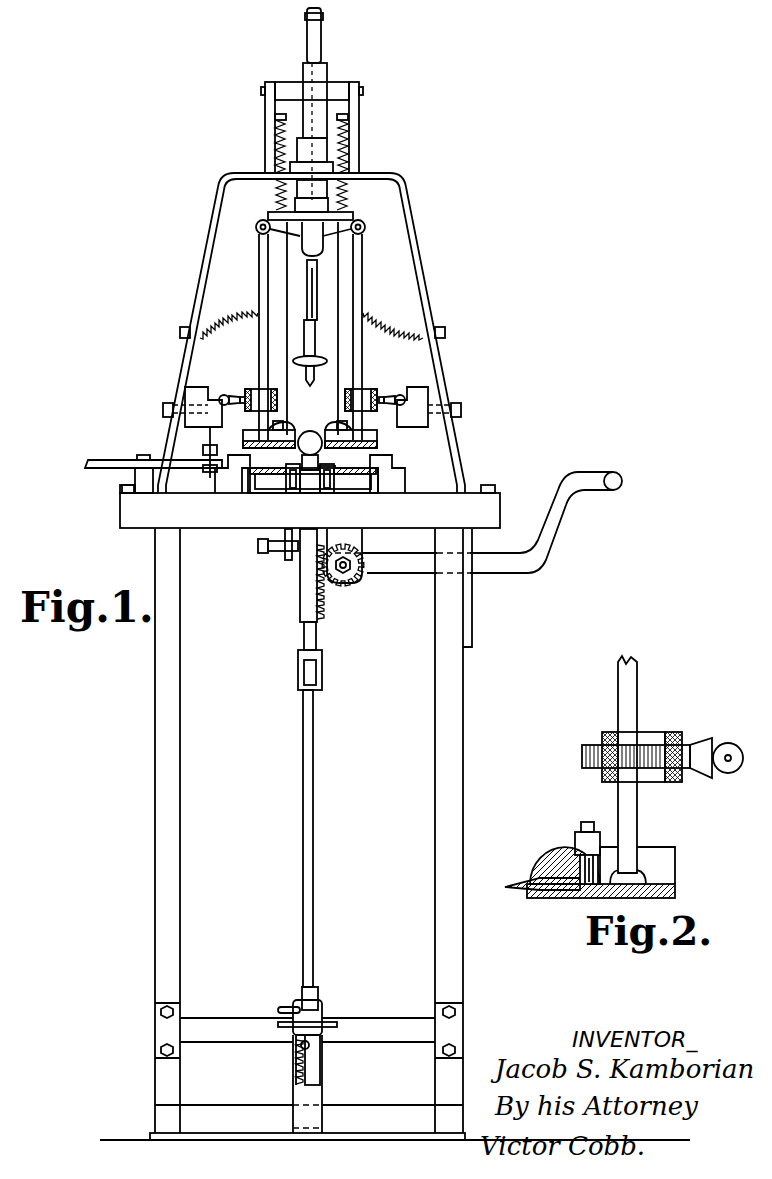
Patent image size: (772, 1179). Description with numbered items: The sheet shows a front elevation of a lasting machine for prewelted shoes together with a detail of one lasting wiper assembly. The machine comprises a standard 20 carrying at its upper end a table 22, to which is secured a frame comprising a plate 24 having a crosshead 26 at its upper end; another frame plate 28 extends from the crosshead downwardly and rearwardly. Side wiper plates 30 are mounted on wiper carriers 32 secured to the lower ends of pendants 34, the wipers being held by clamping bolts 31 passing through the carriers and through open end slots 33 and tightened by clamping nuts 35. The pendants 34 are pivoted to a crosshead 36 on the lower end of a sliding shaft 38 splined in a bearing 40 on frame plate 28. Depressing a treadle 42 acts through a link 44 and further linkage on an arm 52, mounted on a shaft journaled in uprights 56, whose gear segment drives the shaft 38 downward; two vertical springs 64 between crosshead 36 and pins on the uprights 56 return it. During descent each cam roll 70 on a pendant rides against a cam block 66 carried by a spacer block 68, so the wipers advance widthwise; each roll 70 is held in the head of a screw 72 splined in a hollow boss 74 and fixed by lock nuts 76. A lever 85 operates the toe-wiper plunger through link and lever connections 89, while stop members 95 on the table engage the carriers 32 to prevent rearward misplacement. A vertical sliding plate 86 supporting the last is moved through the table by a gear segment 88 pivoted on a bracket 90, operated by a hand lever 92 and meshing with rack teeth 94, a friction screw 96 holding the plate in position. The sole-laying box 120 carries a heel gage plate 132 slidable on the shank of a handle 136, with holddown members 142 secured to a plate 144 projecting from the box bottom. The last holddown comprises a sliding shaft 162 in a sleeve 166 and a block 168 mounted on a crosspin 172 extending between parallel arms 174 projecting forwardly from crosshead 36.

In FIG. 1, the standard 20 is at (464, 810).
In FIG. 1, the table 22 is at (310, 506).
In FIG. 1, the frame plate 24 is at (421, 277).
In FIG. 1, the crosshead 26 is at (378, 173).
In FIG. 1, the frame plate 28 is at (340, 262).
In FIG. 1, the side wiper plates 30 is at (306, 431).
In FIG. 2, the side wiper plates 30 is at (523, 885).
In FIG. 2, the clamping bolts 31 is at (569, 888).
In FIG. 1, the wiper carriers 32 is at (266, 434).
In FIG. 2, the wiper carriers 32 is at (550, 851).
In FIG. 2, the open end slots 33 is at (669, 880).
In FIG. 1, the pendants 34 is at (262, 281).
In FIG. 2, the pendants 34 is at (623, 682).
In FIG. 2, the clamping nuts 35 is at (577, 831).
In FIG. 1, the crosshead 36 is at (354, 217).
In FIG. 1, the sliding shaft 38 is at (323, 73).
In FIG. 1, the bearing 40 is at (326, 151).
In FIG. 1, the treadle 42 is at (321, 1023).
In FIG. 1, the link 44 is at (314, 786).
In FIG. 1, the arm 52 is at (314, 58).
In FIG. 1, the uprights 56 is at (268, 104).
In FIG. 1, the vertical springs 64 is at (278, 137).
In FIG. 1, the cam blocks 66 is at (222, 394).
In FIG. 1, the spacer blocks 68 is at (304, 418).
In FIG. 1, the cam roll 70 is at (233, 395).
In FIG. 2, the cam roll 70 is at (730, 741).
In FIG. 2, the screw 72 is at (582, 757).
In FIG. 2, the hollow boss 74 is at (650, 783).
In FIG. 2, the lock nuts 76 is at (672, 735).
In FIG. 1, the lever 85 is at (112, 460).
In FIG. 1, the vertical sliding plate 86 is at (303, 592).
In FIG. 1, the gear segment 88 is at (357, 586).
In FIG. 1, the link and lever connections 89 is at (220, 458).
In FIG. 1, the bracket 90 is at (352, 538).
In FIG. 1, the hand lever 92 is at (509, 575).
In FIG. 1, the rack teeth 94 is at (324, 613).
In FIG. 1, the stop members 95 is at (237, 460).
In FIG. 1, the friction screw 96 is at (258, 547).
In FIG. 1, the box 120 is at (283, 486).
In FIG. 1, the gage plate 132 is at (333, 472).
In FIG. 1, the handle 136 is at (314, 450).
In FIG. 1, the holddown members 142 is at (286, 478).
In FIG. 1, the plate 144 is at (315, 493).
In FIG. 1, the sliding shaft 162 is at (305, 334).
In FIG. 1, the sleeve 166 is at (304, 284).
In FIG. 1, the block 168 is at (305, 244).
In FIG. 1, the crosspin 172 is at (323, 233).
In FIG. 1, the parallel arms 174 is at (298, 235).